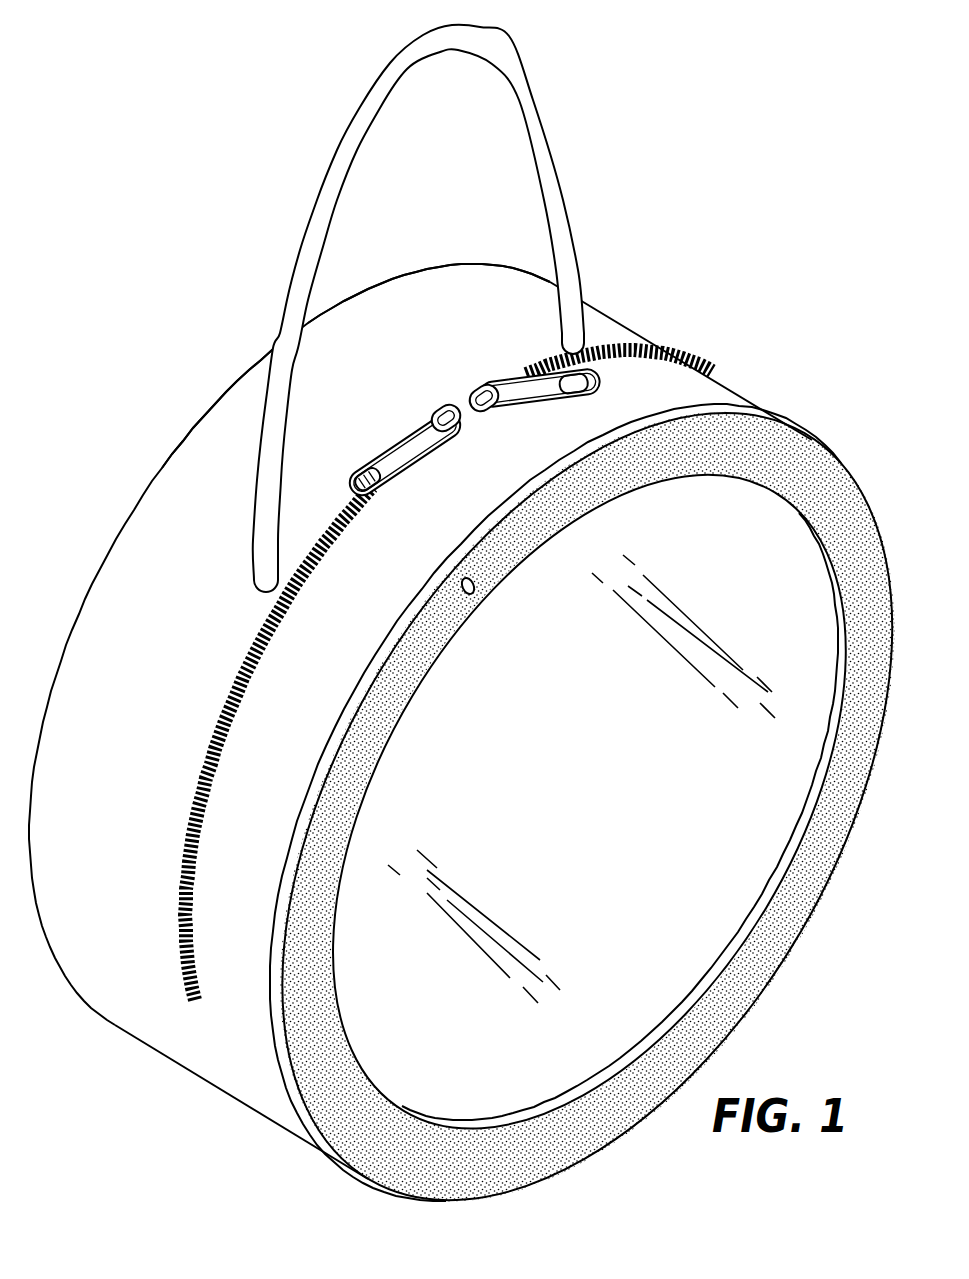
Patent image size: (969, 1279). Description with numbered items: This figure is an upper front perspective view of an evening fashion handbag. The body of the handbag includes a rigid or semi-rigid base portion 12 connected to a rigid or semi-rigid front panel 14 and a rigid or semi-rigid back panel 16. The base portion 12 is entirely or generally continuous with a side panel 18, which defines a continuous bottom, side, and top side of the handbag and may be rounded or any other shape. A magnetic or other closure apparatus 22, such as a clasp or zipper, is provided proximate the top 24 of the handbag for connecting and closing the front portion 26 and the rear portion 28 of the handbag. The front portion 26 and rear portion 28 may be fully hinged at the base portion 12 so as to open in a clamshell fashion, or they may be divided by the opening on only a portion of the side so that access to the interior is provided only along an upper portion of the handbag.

The base portion 12 is at (575, 1167).
The front panel 14 is at (748, 875).
The back panel 16 is at (132, 513).
The side panel 18 is at (513, 77).
The closure apparatus 22 is at (407, 450).
The top 24 is at (450, 287).
The front portion 26 is at (670, 395).
The rear portion 28 is at (233, 405).